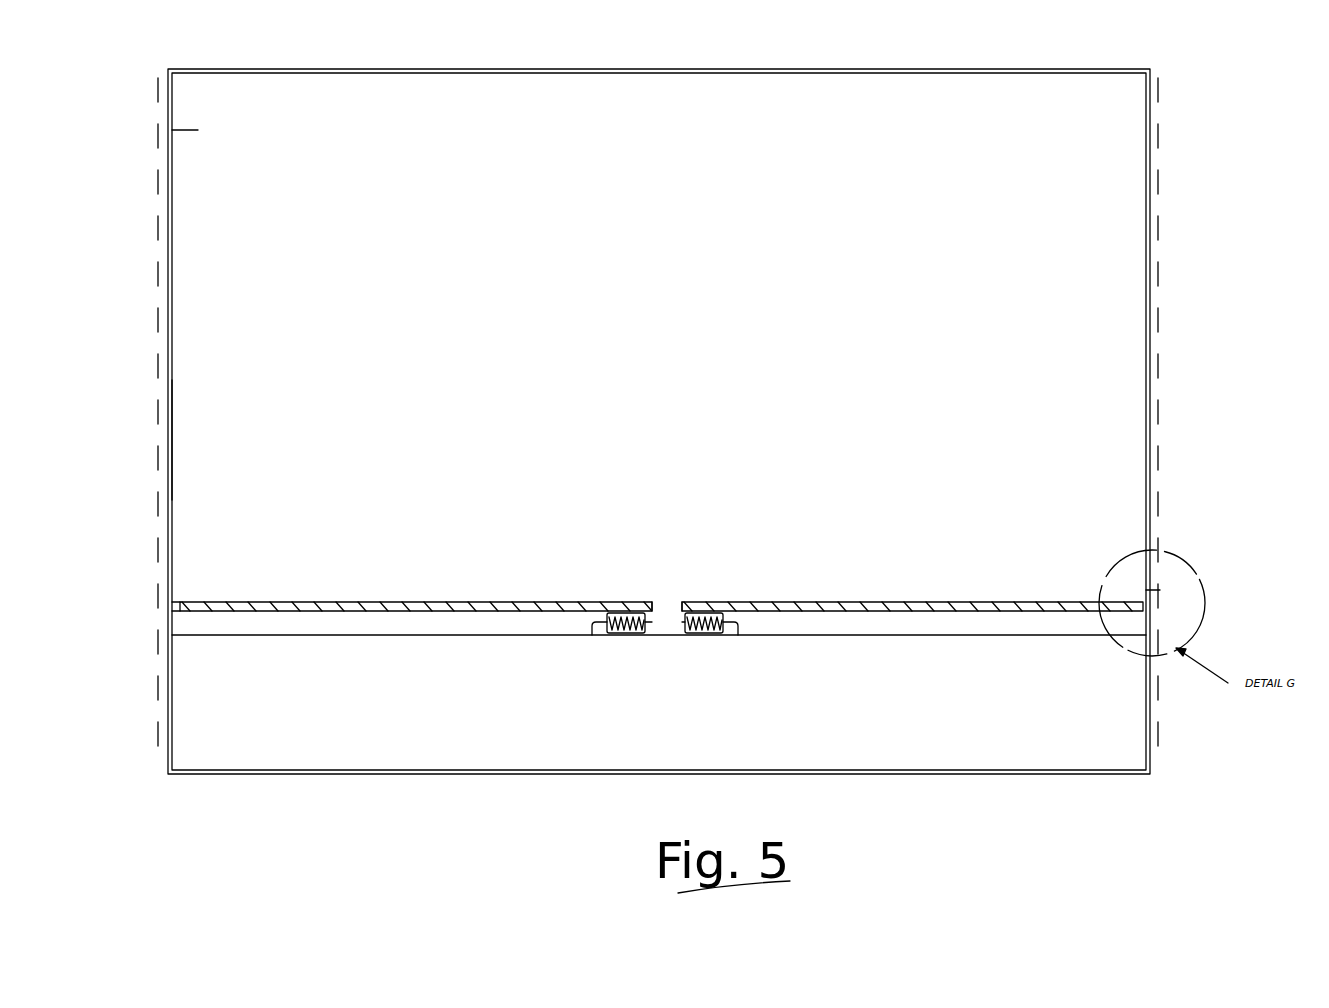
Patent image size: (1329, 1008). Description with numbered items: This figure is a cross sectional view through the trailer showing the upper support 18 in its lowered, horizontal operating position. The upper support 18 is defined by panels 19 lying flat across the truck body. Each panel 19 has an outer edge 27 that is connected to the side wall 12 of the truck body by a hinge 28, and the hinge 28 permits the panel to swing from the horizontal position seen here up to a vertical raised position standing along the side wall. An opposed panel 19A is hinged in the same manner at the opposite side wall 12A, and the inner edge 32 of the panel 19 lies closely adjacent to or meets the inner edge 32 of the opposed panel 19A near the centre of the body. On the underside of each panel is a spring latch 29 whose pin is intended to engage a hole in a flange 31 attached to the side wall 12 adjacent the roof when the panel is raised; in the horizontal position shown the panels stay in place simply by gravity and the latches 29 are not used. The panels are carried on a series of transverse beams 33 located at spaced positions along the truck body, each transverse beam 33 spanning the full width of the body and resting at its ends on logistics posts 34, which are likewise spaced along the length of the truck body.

The side wall 12 is at (1155, 505).
The opposite side wall 12A is at (175, 442).
The upper support 18 is at (812, 601).
The panel 19 is at (926, 601).
The opposed panel 19A is at (528, 601).
The outer edge 27 is at (1140, 598).
The hinge 28 is at (1160, 590).
The spring latch 29 is at (720, 640).
The flange 31 is at (198, 130).
The inner edge 32 is at (655, 605).
The transverse beam 33 is at (318, 626).
The logistics post 34 is at (160, 357).